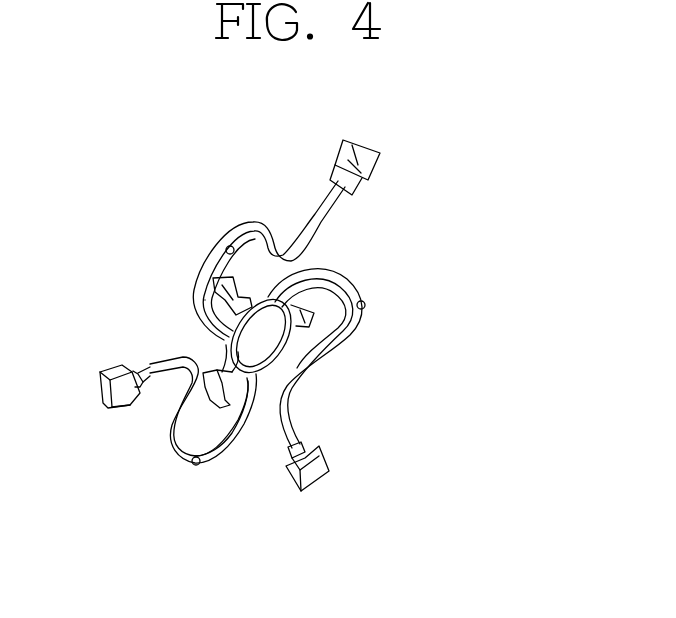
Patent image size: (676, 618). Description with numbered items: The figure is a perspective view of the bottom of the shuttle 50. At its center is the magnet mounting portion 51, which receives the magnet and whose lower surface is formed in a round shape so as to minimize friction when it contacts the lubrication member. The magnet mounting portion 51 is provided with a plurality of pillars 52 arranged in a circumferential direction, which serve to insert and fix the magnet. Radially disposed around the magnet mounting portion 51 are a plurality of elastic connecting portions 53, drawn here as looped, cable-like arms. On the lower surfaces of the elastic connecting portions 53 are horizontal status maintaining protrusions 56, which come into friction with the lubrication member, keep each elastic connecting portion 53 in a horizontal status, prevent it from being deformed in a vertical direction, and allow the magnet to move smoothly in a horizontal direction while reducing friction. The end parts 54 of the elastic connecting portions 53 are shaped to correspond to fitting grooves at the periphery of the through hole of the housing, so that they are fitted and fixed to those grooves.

The shuttle 50 is at (137, 208).
The magnet mounting portion 51 is at (259, 293).
The pillar 52 is at (222, 293).
The elastic connecting portion 53 is at (337, 350).
The end part 54 is at (366, 166).
The horizontal status maintaining protrusion 56 is at (365, 305).